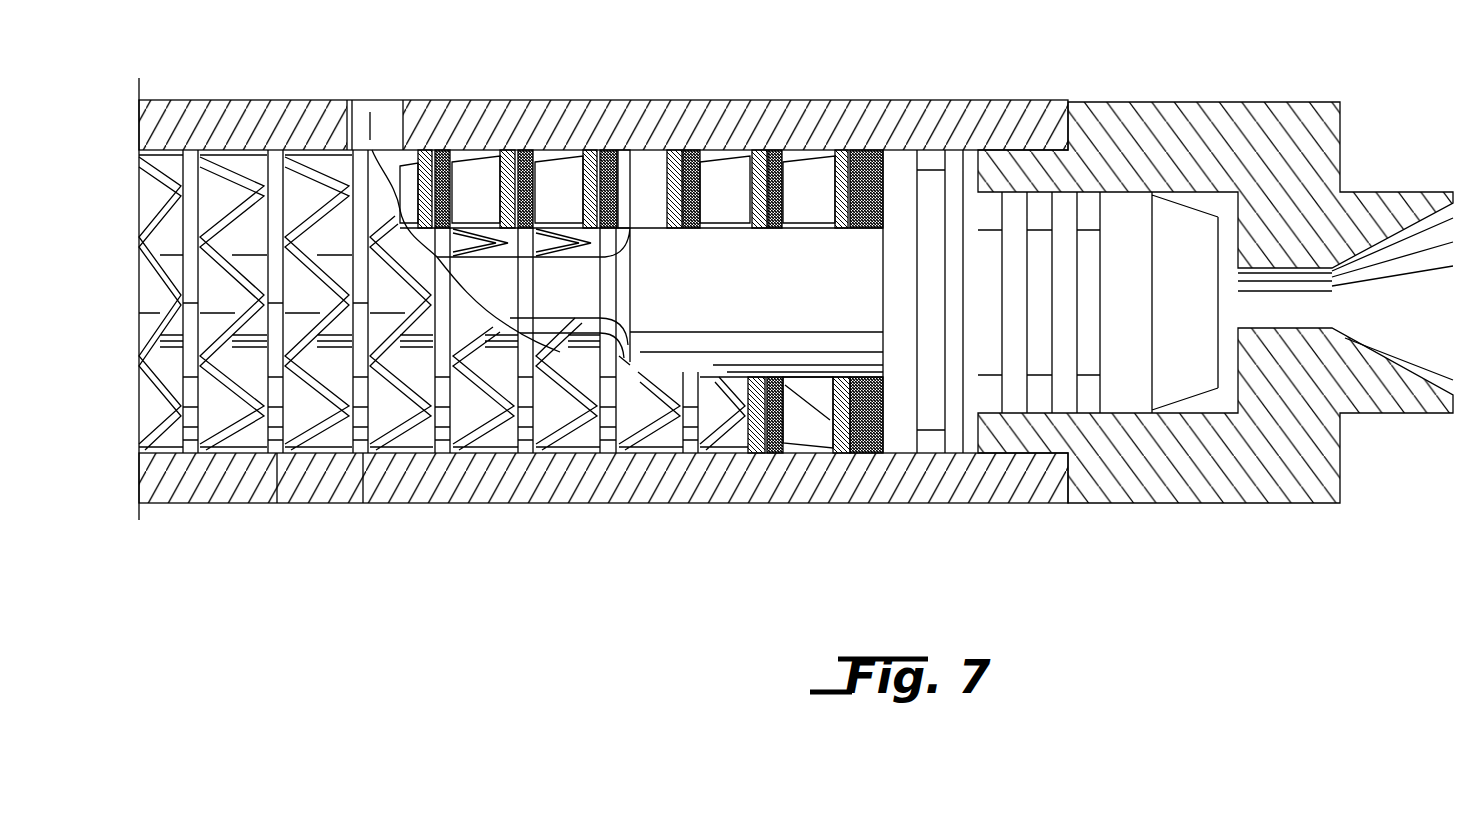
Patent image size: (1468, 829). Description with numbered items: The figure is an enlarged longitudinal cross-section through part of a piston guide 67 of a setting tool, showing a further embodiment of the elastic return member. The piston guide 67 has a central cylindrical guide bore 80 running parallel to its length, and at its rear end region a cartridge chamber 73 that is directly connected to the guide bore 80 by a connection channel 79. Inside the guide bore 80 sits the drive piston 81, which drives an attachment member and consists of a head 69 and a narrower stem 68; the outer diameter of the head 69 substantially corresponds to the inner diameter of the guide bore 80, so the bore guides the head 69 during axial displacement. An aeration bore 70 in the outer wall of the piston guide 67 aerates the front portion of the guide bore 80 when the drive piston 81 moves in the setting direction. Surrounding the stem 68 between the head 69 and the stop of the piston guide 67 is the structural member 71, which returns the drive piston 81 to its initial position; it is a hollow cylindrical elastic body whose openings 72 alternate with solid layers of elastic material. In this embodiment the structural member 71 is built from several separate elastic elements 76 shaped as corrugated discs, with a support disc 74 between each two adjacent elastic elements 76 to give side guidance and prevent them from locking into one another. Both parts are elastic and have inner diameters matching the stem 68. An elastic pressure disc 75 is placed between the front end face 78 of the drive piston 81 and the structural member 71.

The piston guide 67 is at (305, 120).
The stem 68 is at (583, 310).
The head 69 is at (958, 168).
The aeration bore 70 is at (380, 118).
The structural member 71 is at (212, 458).
The openings 72 is at (553, 180).
The cartridge chamber 73 is at (1428, 250).
The support disc 74 is at (277, 501).
The elastic pressure disc 75 is at (858, 160).
The separate elastic elements 76 is at (473, 454).
The end face 78 is at (870, 430).
The connection channel 79 is at (1309, 328).
The guide bore 80 is at (703, 155).
The drive piston 81 is at (816, 390).